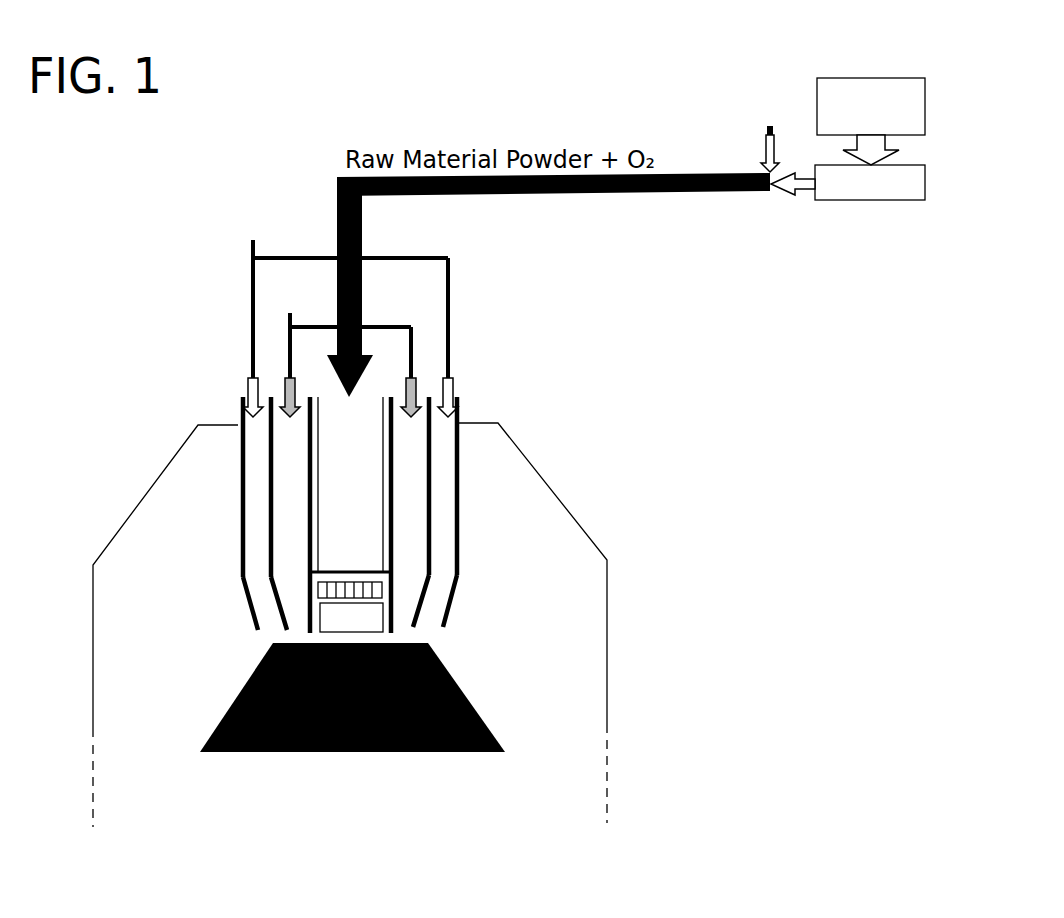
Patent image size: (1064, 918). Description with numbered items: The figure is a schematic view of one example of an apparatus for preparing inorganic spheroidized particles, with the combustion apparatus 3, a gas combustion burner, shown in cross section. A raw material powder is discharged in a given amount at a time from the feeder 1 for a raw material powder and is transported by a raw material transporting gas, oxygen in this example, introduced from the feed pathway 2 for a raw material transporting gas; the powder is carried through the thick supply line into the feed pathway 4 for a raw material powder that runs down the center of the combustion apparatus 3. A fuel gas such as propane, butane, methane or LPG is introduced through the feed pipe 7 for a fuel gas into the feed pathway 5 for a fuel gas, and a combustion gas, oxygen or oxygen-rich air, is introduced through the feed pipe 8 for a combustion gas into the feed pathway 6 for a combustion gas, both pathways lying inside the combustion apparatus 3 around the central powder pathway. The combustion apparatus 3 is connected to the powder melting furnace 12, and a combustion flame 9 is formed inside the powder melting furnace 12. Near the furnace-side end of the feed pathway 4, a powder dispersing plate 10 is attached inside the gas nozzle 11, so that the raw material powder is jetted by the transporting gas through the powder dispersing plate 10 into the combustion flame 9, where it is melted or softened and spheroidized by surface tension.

The feeder for a raw material powder 1 is at (925, 184).
The feed pathway for a raw material transporting gas 2 is at (770, 128).
The combustion apparatus 3 is at (212, 395).
The feed pathway for a raw material powder 4 is at (363, 493).
The feed pathway for a fuel gas 5 is at (412, 453).
The feed pathway for a combustion gas 6 is at (442, 520).
The feed pipe for a fuel gas 7 is at (412, 347).
The feed pipe for a combustion gas 8 is at (252, 323).
The combustion flame 9 is at (270, 730).
The powder dispersing plate 10 is at (318, 593).
The gas nozzle 11 is at (440, 627).
The powder melting furnace 12 is at (607, 628).